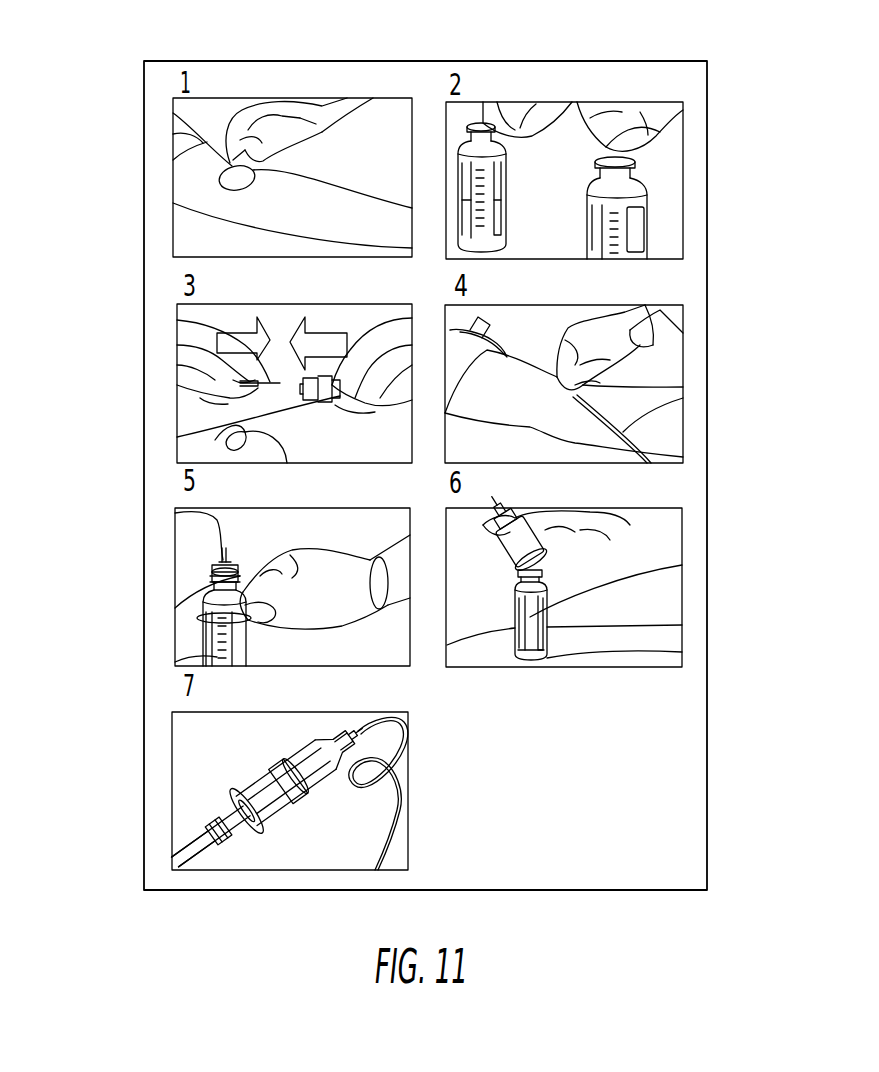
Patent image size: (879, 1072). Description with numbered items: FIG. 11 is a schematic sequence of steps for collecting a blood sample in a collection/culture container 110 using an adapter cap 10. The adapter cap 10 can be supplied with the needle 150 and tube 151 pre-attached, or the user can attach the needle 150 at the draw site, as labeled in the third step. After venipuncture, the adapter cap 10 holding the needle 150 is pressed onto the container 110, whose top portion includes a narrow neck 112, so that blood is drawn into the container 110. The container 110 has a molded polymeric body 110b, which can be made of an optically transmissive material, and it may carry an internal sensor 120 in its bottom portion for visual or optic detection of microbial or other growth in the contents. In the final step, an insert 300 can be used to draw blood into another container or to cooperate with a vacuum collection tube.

The adapter cap 10 is at (320, 400).
The collection container 110 is at (503, 173).
The container body 110b is at (495, 212).
The neck 112 is at (645, 183).
The internal sensor 120 is at (545, 656).
The needle 150 is at (277, 382).
The tube 151 is at (623, 432).
The insert 300 is at (275, 798).